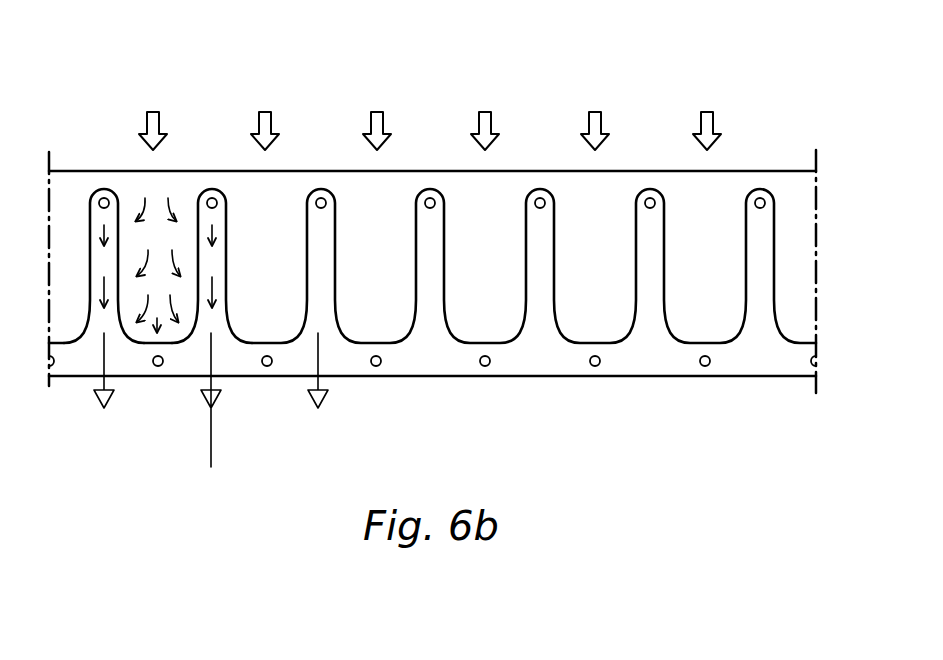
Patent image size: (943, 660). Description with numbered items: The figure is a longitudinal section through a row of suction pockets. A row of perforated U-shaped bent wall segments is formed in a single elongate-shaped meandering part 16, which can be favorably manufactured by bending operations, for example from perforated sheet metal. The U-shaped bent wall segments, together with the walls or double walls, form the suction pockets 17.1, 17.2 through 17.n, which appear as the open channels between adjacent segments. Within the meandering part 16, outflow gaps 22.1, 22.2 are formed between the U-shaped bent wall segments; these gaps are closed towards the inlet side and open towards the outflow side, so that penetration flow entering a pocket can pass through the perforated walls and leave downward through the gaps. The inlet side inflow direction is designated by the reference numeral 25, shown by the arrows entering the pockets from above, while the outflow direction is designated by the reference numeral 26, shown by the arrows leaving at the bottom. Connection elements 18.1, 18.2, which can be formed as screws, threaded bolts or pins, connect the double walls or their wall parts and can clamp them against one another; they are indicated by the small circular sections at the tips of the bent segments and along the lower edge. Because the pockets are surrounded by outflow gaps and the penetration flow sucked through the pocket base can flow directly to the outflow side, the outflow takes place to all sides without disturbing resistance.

The meandering part 16 is at (452, 275).
The suction pocket 17.1 is at (128, 200).
The suction pocket 17.2 is at (249, 198).
The suction pocket 17.n is at (684, 208).
The connection element 18.1 is at (707, 367).
The connection element 18.2 is at (763, 200).
The outflow gap 22.1 is at (108, 330).
The outflow gap 22.2 is at (218, 330).
The inlet side inflow direction 25 is at (154, 110).
The outflow direction 26 is at (206, 412).